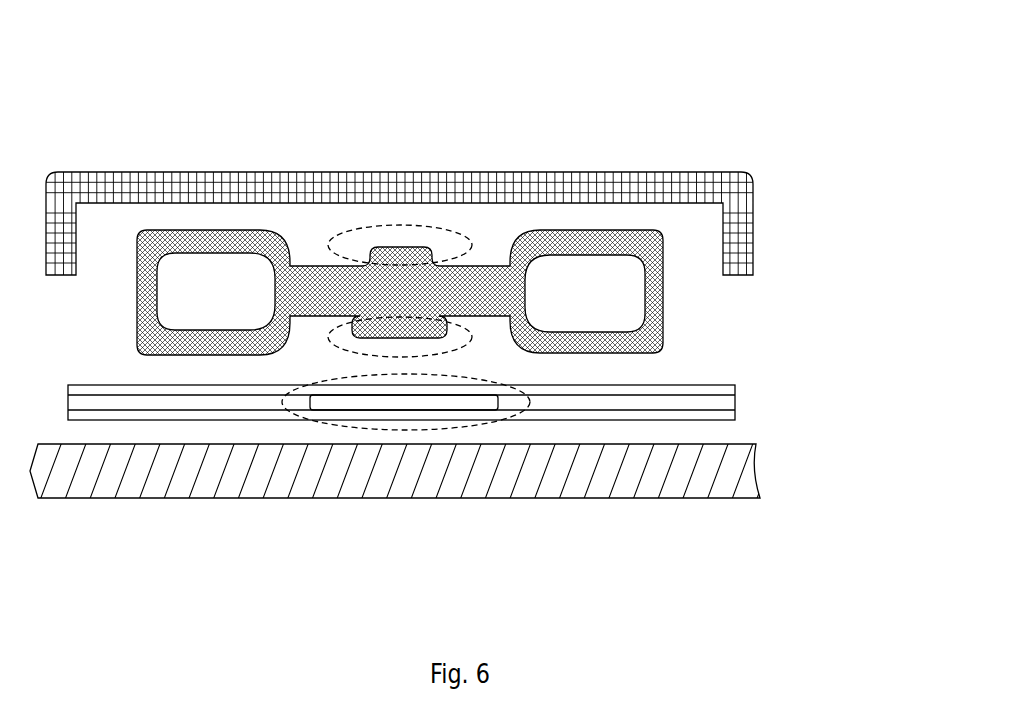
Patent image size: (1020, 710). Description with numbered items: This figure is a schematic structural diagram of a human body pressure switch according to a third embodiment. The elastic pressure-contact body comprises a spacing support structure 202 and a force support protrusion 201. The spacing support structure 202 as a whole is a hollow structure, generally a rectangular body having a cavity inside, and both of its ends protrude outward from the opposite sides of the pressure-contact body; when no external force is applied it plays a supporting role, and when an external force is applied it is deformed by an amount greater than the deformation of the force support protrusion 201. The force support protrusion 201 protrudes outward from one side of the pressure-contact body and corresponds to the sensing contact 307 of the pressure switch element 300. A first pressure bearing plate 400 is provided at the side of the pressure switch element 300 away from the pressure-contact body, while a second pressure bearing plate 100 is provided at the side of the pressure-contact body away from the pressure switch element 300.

The second pressure bearing plate 100 is at (750, 233).
The force support protrusion 201 is at (332, 248).
The spacing support structure 202 is at (663, 312).
The pressure switch element 300 is at (737, 402).
The sensing contact 307 is at (343, 423).
The first pressure bearing plate 400 is at (443, 487).